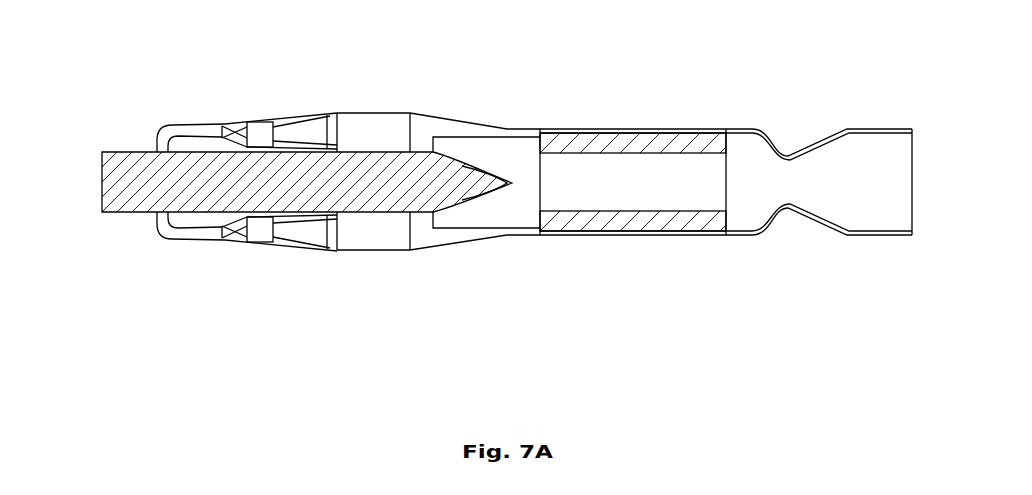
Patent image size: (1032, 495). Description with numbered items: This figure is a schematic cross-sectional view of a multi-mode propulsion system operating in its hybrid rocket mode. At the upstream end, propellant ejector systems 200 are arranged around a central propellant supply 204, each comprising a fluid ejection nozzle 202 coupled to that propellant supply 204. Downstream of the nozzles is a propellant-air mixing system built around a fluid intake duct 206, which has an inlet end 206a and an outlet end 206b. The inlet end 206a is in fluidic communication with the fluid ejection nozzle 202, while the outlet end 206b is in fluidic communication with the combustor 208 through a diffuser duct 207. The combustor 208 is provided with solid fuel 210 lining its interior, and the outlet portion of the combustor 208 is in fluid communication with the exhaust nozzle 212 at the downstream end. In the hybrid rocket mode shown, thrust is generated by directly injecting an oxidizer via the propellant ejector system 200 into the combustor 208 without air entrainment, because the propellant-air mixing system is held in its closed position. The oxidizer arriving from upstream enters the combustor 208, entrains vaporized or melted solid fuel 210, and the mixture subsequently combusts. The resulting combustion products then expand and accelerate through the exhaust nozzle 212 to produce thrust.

The propellant ejector system 200 is at (338, 123).
The fluid ejection nozzle 202 is at (215, 123).
The propellant supply 204 is at (132, 180).
The fluid intake duct 206 is at (300, 192).
The inlet end 206a is at (250, 242).
The outlet end 206b is at (328, 233).
The diffuser duct 207 is at (388, 112).
The combustor 208 is at (747, 125).
The solid fuel 210 is at (603, 222).
The exhaust nozzle 212 is at (912, 125).